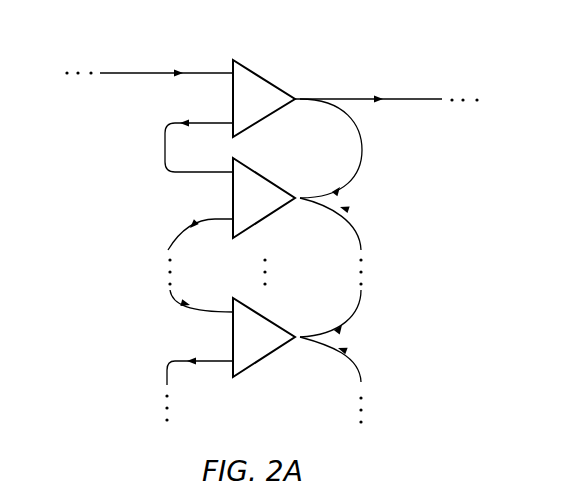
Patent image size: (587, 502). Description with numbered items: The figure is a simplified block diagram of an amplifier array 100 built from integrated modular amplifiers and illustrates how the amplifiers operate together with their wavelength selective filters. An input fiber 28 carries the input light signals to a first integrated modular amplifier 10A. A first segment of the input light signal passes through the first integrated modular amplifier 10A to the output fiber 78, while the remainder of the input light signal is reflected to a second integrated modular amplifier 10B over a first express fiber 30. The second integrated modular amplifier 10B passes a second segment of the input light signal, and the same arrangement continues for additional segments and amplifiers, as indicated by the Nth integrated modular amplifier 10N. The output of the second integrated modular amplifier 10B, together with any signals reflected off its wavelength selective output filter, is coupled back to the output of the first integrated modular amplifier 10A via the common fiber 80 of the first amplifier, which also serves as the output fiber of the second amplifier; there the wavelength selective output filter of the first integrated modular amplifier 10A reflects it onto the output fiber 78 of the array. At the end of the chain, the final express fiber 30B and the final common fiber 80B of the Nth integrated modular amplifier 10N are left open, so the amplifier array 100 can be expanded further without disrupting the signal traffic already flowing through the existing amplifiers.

The first integrated modular amplifier 10A is at (265, 74).
The second integrated modular amplifier 10B is at (263, 172).
The Nth integrated modular amplifier 10N is at (263, 312).
The input fiber 28 is at (140, 73).
The first express fiber 30 is at (163, 149).
The output fiber 78 is at (412, 99).
The common fiber 80 is at (362, 152).
The final express fiber 30B is at (163, 381).
The final common fiber 80B is at (362, 381).
The amplifier array 100 is at (375, 20).